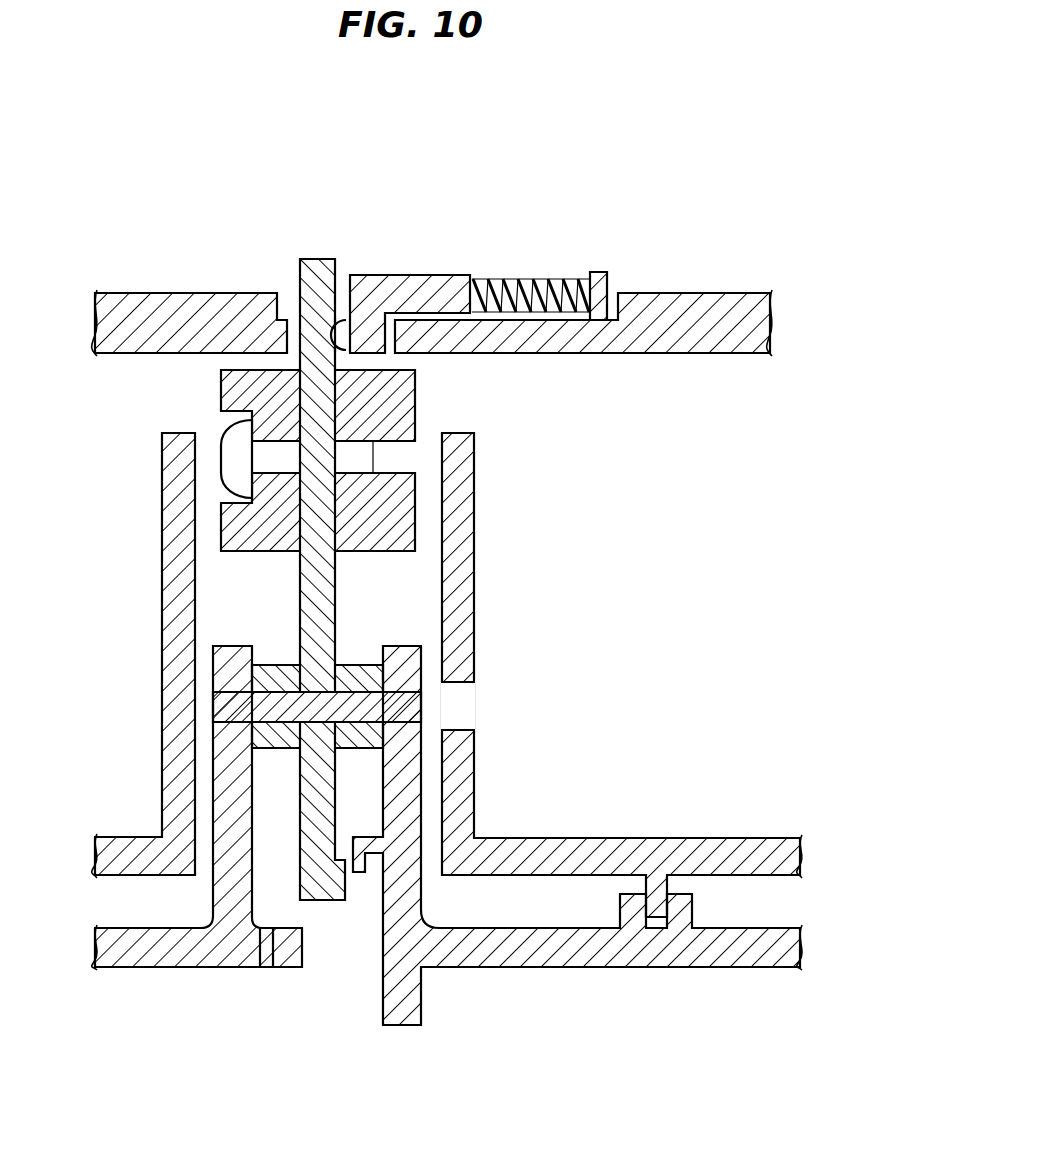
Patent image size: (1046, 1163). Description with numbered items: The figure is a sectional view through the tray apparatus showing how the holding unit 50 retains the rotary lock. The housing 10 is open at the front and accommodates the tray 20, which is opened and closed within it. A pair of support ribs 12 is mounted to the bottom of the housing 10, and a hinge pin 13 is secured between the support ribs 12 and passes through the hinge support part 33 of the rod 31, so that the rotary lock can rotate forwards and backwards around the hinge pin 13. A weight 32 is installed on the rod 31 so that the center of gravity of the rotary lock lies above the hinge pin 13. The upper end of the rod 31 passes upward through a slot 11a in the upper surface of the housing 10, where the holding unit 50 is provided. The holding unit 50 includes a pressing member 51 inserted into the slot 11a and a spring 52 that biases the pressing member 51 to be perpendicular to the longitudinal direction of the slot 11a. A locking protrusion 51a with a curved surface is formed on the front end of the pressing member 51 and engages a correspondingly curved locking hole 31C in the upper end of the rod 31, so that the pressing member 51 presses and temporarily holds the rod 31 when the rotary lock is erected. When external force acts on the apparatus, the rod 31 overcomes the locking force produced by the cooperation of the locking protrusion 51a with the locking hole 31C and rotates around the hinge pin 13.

The housing 10 is at (447, 874).
The slot 11a is at (286, 303).
The support ribs 12 is at (410, 806).
The hinge pin 13 is at (408, 705).
The tray 20 is at (175, 683).
The rod 31 is at (312, 587).
The locking hole 31C is at (357, 288).
The weight 32 is at (413, 398).
The hinge support part 33 is at (362, 677).
The holding unit 50 is at (327, 250).
The pressing member 51 is at (259, 282).
The locking protrusion 51a is at (327, 332).
The spring 52 is at (533, 300).